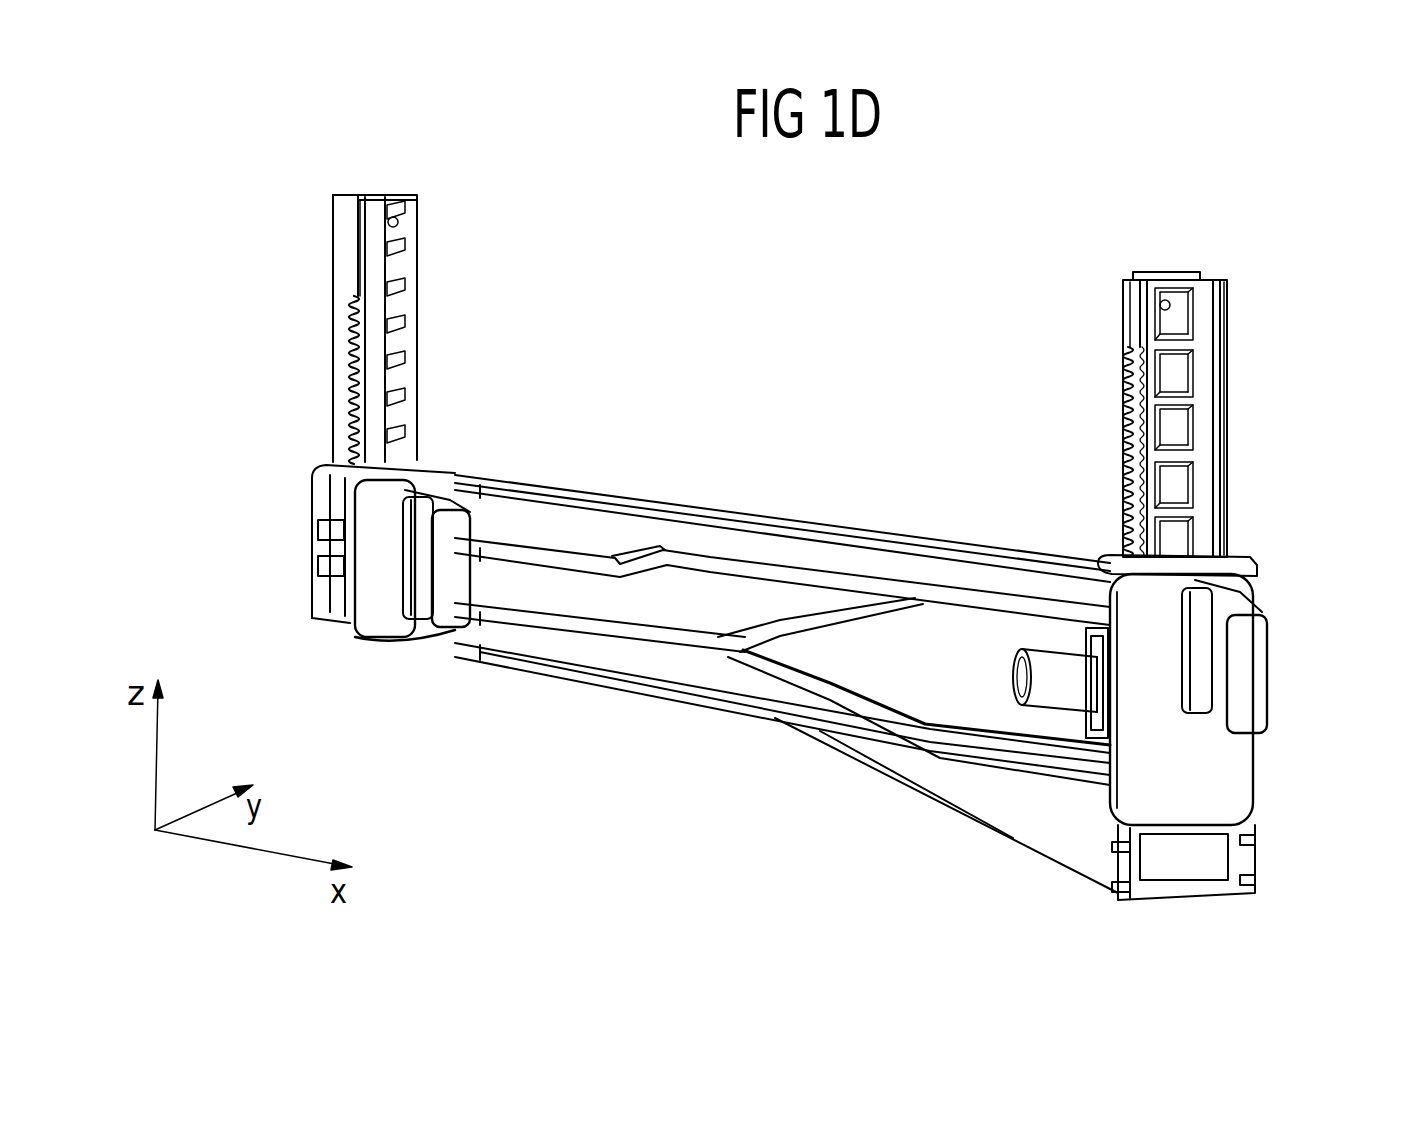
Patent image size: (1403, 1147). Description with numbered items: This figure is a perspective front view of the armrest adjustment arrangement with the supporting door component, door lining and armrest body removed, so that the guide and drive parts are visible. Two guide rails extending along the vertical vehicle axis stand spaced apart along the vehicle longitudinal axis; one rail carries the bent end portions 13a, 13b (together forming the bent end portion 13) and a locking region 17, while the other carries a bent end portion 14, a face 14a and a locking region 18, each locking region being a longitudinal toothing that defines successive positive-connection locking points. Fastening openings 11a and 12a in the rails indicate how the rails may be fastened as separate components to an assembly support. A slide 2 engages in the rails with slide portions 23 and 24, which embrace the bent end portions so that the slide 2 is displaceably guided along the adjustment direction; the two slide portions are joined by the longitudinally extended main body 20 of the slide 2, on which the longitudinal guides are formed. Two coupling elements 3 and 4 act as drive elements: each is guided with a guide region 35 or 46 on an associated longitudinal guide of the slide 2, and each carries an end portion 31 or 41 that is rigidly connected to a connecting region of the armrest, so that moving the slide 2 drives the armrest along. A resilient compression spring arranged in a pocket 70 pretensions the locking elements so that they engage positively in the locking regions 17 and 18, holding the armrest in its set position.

The slide 2 is at (685, 712).
The coupling element 3 is at (1200, 715).
The coupling element 4 is at (410, 583).
The fastening opening 11a is at (1172, 307).
The fastening opening 12a is at (400, 220).
The bent end portion 13 is at (1193, 258).
The bent end portion 13a is at (1125, 292).
The bent end portion 13b is at (1235, 292).
The bent end portion 14 is at (331, 187).
The post face 14a is at (370, 258).
The locking region 17 is at (1122, 422).
The locking region 18 is at (352, 350).
The main body 20 is at (598, 655).
The slide portion 23 is at (1252, 572).
The slide portion 24 is at (315, 585).
The end portion 31 is at (1262, 618).
The guide region 35 is at (1235, 748).
The end portion 41 is at (460, 512).
The guide region 46 is at (375, 625).
The pocket 70 is at (1050, 690).